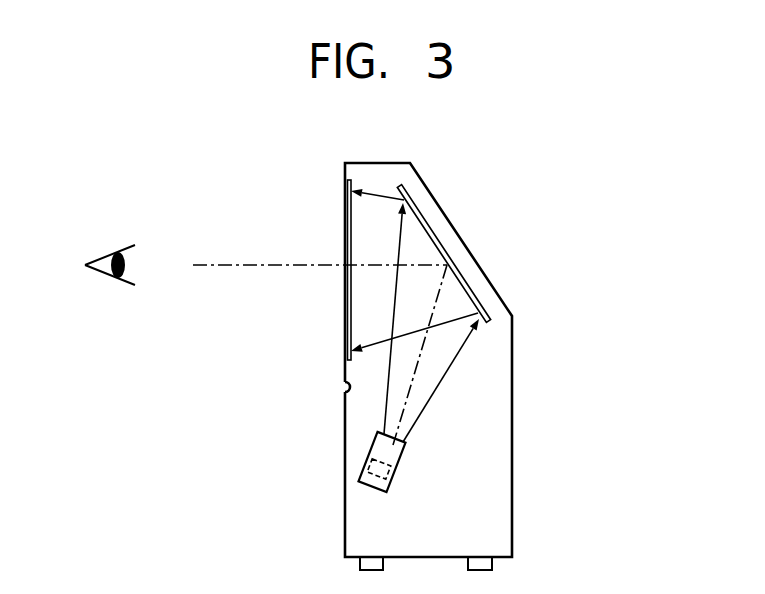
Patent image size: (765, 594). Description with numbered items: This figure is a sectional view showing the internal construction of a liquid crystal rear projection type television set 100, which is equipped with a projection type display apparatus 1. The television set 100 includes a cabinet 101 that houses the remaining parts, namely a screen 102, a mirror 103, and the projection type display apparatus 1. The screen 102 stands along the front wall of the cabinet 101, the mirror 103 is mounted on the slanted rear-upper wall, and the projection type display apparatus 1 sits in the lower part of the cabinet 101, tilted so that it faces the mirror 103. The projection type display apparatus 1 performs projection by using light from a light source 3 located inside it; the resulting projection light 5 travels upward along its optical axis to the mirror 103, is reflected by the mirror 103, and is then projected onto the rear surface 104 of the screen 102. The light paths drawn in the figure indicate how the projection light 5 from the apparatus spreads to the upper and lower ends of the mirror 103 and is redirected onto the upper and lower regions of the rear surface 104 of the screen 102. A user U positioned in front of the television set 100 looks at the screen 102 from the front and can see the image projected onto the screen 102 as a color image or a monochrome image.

The projection type display apparatus 1 is at (405, 459).
The light source 3 is at (370, 466).
The projection light 5 is at (398, 402).
The television set 100 is at (404, 362).
The cabinet 101 is at (512, 514).
The screen 102 is at (346, 308).
The mirror 103 is at (446, 222).
The rear surface 104 is at (347, 224).
The user U is at (110, 298).